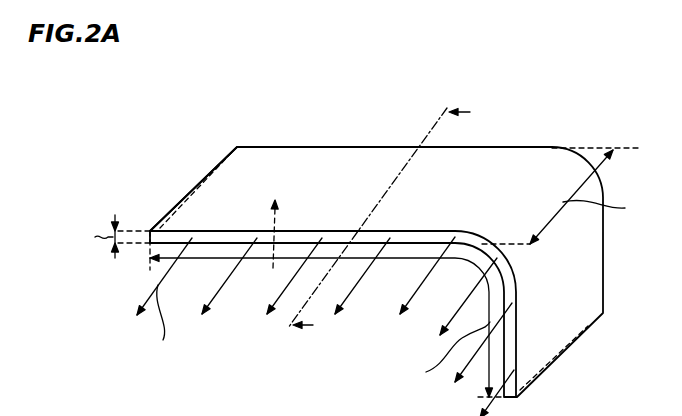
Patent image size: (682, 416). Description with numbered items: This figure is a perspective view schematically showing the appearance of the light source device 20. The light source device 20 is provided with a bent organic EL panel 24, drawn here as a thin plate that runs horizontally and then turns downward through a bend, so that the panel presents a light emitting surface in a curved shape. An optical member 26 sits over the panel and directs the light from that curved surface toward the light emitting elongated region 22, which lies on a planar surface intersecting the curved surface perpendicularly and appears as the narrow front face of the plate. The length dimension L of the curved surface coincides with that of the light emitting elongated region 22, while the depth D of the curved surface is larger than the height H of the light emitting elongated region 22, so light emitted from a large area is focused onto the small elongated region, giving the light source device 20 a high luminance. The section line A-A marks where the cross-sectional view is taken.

The light source device 20 is at (198, 94).
The light emitting elongated region 22 is at (402, 240).
The organic EL panel 24 is at (258, 240).
The optical member 26 is at (329, 178).